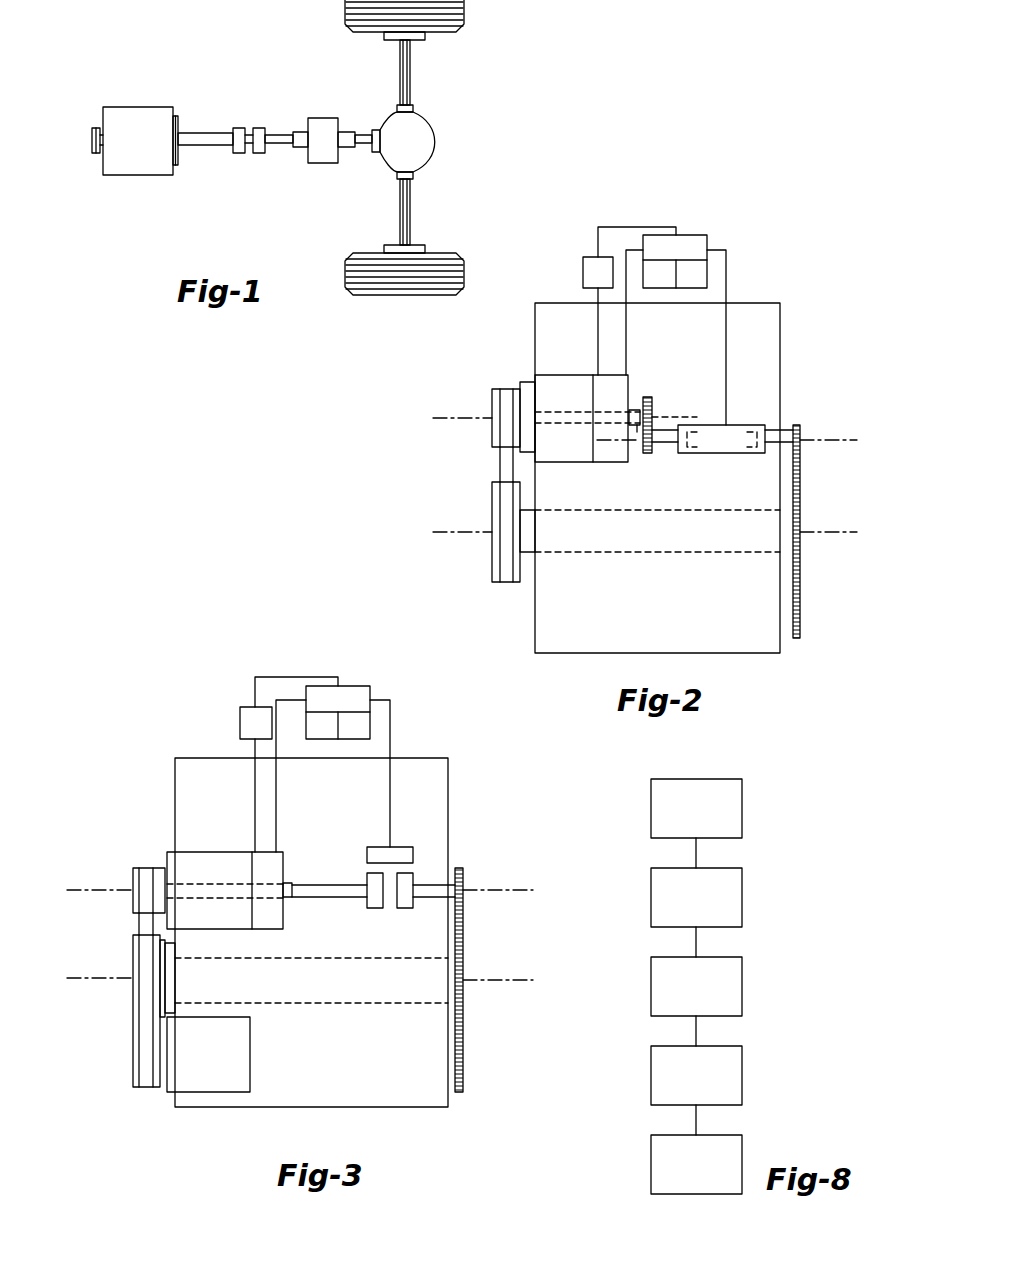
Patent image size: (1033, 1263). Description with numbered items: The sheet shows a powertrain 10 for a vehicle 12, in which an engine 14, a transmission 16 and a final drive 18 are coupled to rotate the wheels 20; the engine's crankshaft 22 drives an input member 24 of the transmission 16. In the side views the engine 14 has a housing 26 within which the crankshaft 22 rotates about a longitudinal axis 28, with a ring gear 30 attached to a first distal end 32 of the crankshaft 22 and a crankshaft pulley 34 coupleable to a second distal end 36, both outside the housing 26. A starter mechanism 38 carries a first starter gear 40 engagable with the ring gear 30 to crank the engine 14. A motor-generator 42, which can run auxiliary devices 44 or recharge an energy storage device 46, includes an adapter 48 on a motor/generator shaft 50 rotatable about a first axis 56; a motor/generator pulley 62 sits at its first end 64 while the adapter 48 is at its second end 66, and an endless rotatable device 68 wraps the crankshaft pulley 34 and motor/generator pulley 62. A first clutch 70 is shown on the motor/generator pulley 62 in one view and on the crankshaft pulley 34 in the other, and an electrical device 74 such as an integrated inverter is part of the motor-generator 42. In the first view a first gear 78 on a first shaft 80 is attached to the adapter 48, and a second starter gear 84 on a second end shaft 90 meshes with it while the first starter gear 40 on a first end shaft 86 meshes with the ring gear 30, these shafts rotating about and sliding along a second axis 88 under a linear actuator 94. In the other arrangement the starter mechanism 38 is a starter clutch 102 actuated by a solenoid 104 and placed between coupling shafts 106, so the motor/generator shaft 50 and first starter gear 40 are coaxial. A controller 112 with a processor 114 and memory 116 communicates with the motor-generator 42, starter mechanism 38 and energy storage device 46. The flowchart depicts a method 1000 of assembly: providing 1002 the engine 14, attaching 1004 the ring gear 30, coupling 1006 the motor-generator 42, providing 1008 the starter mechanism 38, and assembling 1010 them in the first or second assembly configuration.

In FIG. 1, the powertrain 10 is at (93, 200).
In FIG. 2, the powertrain 10 is at (782, 237).
In FIG. 3, the powertrain 10 is at (132, 688).
In FIG. 1, the vehicle 12 is at (130, 43).
In FIG. 1, the engine 14 is at (142, 167).
In FIG. 2, the engine 14 is at (782, 332).
In FIG. 3, the engine 14 is at (450, 775).
In FIG. 1, the transmission 16 is at (323, 155).
In FIG. 1, the final drive 18 is at (423, 143).
In FIG. 1, the wheels 20 is at (465, 15).
In FIG. 1, the crankshaft 22 is at (105, 130).
In FIG. 2, the crankshaft 22 is at (643, 553).
In FIG. 3, the crankshaft 22 is at (325, 1003).
In FIG. 1, the input member 24 is at (290, 137).
In FIG. 2, the housing 26 is at (753, 317).
In FIG. 3, the housing 26 is at (423, 767).
In FIG. 2, the longitudinal axis 28 is at (460, 533).
In FIG. 3, the longitudinal axis 28 is at (517, 987).
In FIG. 1, the ring gear 30 is at (180, 125).
In FIG. 2, the ring gear 30 is at (801, 628).
In FIG. 3, the ring gear 30 is at (464, 1082).
In FIG. 2, the first distal end 32 is at (784, 552).
In FIG. 3, the first distal end 32 is at (448, 1003).
In FIG. 1, the crankshaft pulley 34 is at (92, 140).
In FIG. 2, the crankshaft pulley 34 is at (492, 513).
In FIG. 3, the crankshaft pulley 34 is at (133, 952).
In FIG. 2, the second distal end 36 is at (528, 555).
In FIG. 3, the second distal end 36 is at (166, 952).
In FIG. 2, the starter mechanism 38 is at (788, 410).
In FIG. 3, the starter mechanism 38 is at (460, 853).
In FIG. 2, the first starter gear 40 is at (801, 428).
In FIG. 3, the first starter gear 40 is at (464, 878).
In FIG. 2, the motor-generator 42 is at (570, 375).
In FIG. 3, the motor-generator 42 is at (200, 852).
In FIG. 3, the auxiliary devices 44 is at (210, 1092).
In FIG. 2, the energy storage device 46 is at (610, 283).
In FIG. 3, the energy storage device 46 is at (267, 733).
In FIG. 2, the adapter 48 is at (637, 420).
In FIG. 3, the adapter 48 is at (289, 888).
In FIG. 2, the motor/generator shaft 50 is at (563, 427).
In FIG. 3, the motor/generator shaft 50 is at (212, 880).
In FIG. 2, the first axis 56 is at (700, 412).
In FIG. 3, the first axis 56 is at (87, 888).
In FIG. 2, the motor/generator pulley 62 is at (492, 405).
In FIG. 3, the motor/generator pulley 62 is at (133, 903).
In FIG. 2, the first end 64 is at (530, 460).
In FIG. 3, the first end 64 is at (167, 860).
In FIG. 2, the second end 66 is at (631, 410).
In FIG. 3, the second end 66 is at (283, 853).
In FIG. 2, the endless rotatable device 68 is at (500, 468).
In FIG. 3, the endless rotatable device 68 is at (150, 1032).
In FIG. 2, the first clutch 70 is at (527, 382).
In FIG. 3, the first clutch 70 is at (166, 987).
In FIG. 2, the electrical device 74 is at (617, 457).
In FIG. 3, the electrical device 74 is at (283, 917).
In FIG. 2, the first gear 78 is at (654, 432).
In FIG. 2, the first shaft 80 is at (634, 457).
In FIG. 2, the second starter gear 84 is at (653, 453).
In FIG. 2, the first end shaft 86 is at (772, 432).
In FIG. 2, the second axis 88 is at (830, 444).
In FIG. 3, the second axis 88 is at (515, 895).
In FIG. 2, the second end shaft 90 is at (687, 417).
In FIG. 2, the linear actuator 94 is at (683, 465).
In FIG. 3, the starter clutch 102 is at (362, 840).
In FIG. 3, the solenoid 104 is at (400, 847).
In FIG. 3, the coupling shafts 106 is at (348, 908).
In FIG. 2, the controller 112 is at (692, 235).
In FIG. 3, the controller 112 is at (357, 686).
In FIG. 2, the processor 114 is at (668, 285).
In FIG. 3, the processor 114 is at (329, 737).
In FIG. 2, the memory 116 is at (700, 285).
In FIG. 3, the memory 116 is at (362, 737).
In FIG. 8, the method 1000 is at (772, 755).
In FIG. 8, the providing the engine 1002 is at (683, 820).
In FIG. 8, the attaching the ring gear 1004 is at (683, 909).
In FIG. 8, the coupling the motor-generator 1006 is at (683, 998).
In FIG. 8, the providing the starter mechanism 1008 is at (683, 1087).
In FIG. 8, the assembling 1010 is at (683, 1176).